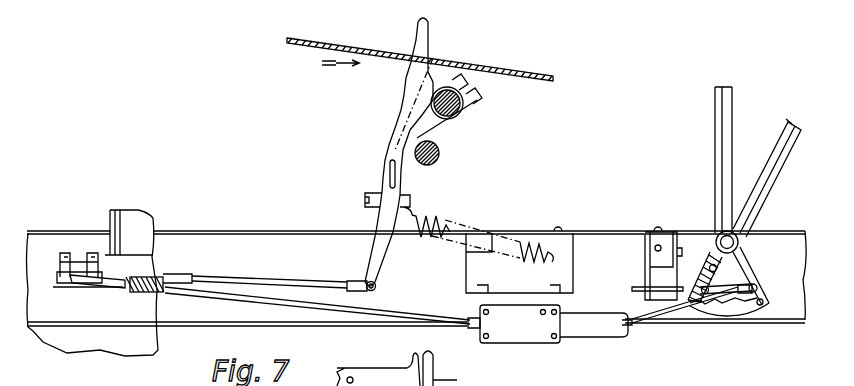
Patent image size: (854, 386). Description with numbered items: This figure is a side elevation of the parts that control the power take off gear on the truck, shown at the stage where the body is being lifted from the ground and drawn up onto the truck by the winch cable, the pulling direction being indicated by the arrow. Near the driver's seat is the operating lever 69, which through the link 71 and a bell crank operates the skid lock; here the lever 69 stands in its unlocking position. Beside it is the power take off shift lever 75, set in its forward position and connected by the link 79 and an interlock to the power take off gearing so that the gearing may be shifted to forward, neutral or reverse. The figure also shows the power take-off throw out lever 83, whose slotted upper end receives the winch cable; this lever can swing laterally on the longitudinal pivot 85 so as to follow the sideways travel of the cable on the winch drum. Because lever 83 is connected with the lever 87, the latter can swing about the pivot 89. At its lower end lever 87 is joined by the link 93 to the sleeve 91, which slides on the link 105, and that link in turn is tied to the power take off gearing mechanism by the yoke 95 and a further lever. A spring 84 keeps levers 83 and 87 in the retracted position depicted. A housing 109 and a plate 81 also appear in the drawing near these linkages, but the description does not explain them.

The operating lever 69 is at (744, 202).
The link 71 is at (640, 287).
The power take off shift lever 75 is at (728, 146).
The link 79 is at (660, 313).
The link plate 81 is at (712, 253).
The power take-off throw out lever 83 is at (424, 48).
The spring 84 is at (413, 213).
The longitudinal pivot 85 is at (365, 193).
The lever 87 is at (383, 157).
The pivot 89 is at (460, 116).
The sleeve 91 is at (155, 282).
The link 93 is at (238, 280).
The yoke 95 is at (120, 283).
The link 105 is at (243, 295).
The housing 109 is at (580, 327).